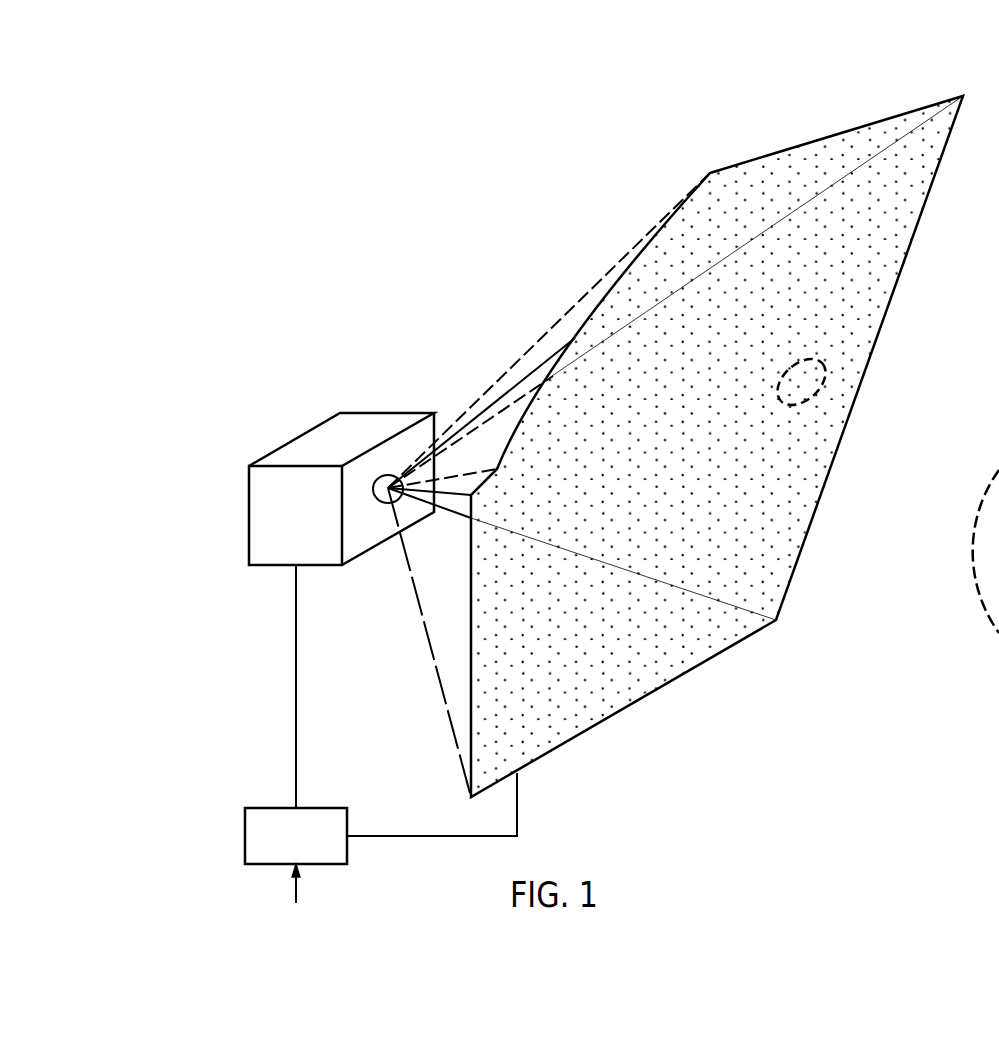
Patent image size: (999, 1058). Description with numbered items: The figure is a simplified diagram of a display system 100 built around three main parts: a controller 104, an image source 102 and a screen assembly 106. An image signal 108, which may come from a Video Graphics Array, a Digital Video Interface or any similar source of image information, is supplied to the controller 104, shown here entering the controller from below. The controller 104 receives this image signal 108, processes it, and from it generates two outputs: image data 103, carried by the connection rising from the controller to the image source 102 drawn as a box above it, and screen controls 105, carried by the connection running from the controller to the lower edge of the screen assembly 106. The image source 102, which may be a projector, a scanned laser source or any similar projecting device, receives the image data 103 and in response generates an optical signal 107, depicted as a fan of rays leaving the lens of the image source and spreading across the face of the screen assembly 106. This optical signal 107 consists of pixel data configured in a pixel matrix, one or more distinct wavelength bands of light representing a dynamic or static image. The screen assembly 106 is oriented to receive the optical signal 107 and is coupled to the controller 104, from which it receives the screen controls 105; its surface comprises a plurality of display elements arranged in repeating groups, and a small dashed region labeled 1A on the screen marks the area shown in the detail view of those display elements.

The display system 100 is at (281, 275).
The image source 102 is at (249, 517).
The image data 103 is at (295, 670).
The controller 104 is at (245, 835).
The screen controls 105 is at (518, 808).
The screen assembly 106 is at (900, 220).
The optical signal 107 is at (546, 336).
The image signal 108 is at (296, 888).
The detail region of display elements 1A is at (810, 397).